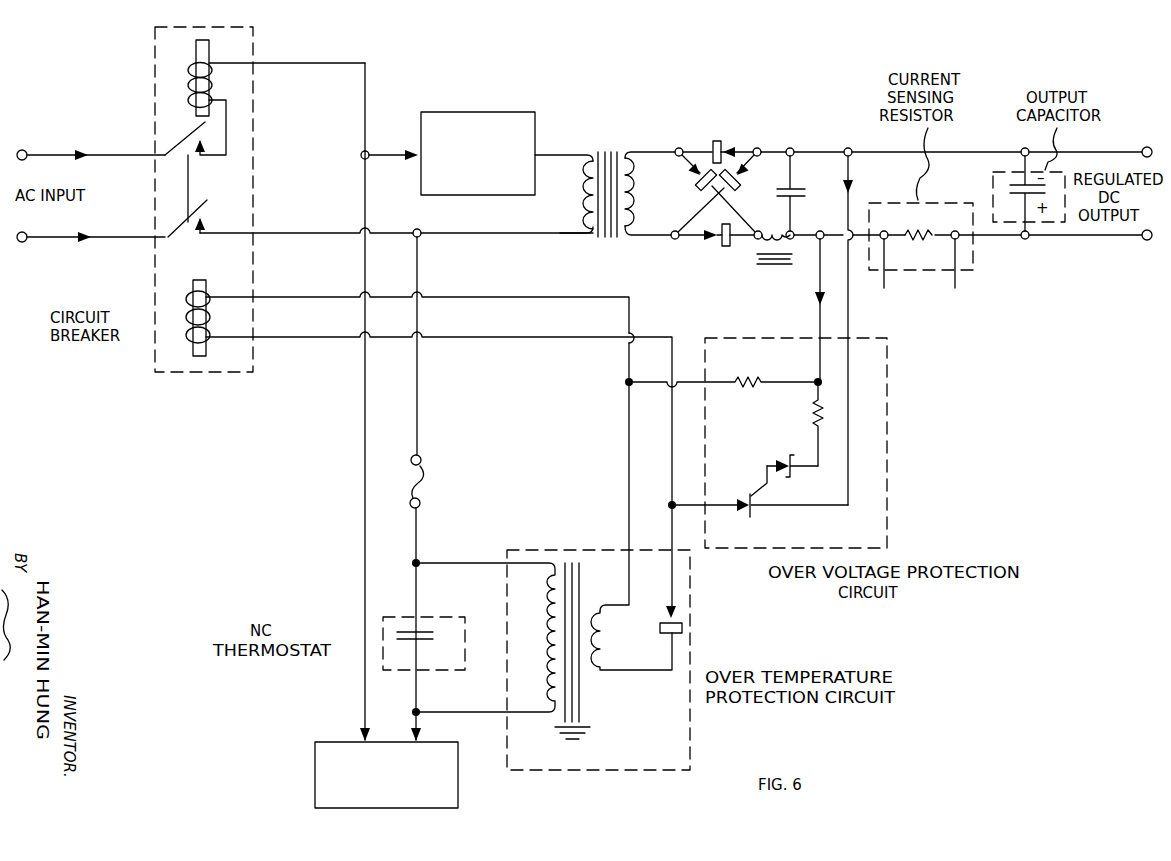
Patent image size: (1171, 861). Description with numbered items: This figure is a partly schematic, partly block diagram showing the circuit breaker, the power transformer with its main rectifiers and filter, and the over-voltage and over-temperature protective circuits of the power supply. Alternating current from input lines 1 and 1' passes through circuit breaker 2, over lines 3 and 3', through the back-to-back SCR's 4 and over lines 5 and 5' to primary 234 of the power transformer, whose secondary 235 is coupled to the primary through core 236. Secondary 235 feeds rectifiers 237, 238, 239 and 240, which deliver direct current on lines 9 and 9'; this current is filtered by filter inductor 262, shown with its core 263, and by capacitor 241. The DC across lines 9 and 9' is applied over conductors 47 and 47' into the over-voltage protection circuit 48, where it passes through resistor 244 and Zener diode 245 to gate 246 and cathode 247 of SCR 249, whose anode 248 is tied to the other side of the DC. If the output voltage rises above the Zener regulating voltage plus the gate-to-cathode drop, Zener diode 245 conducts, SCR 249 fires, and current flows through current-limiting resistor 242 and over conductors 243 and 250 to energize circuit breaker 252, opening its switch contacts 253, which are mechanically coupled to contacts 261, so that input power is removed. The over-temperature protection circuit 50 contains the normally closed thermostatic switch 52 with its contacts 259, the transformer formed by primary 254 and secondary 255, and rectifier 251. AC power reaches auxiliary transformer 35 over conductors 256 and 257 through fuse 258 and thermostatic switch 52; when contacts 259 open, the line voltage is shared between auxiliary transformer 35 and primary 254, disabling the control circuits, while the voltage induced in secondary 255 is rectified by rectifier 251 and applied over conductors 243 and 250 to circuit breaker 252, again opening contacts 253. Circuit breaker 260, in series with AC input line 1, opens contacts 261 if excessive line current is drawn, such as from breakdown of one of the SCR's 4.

The AC input line 1 is at (91, 141).
The AC input line 1' is at (91, 247).
The circuit breaker 2 is at (258, 49).
The line 3 is at (389, 139).
The line 3' is at (396, 220).
The SCR's 4 is at (491, 110).
The line 5 is at (564, 141).
The line 5' is at (564, 219).
The DC voltage line 9 is at (913, 138).
The DC voltage line 9' is at (911, 223).
The auxiliary transformer 35 is at (462, 762).
The conductor 47 is at (805, 310).
The conductor 47' is at (866, 330).
The over-voltage protection circuit 48 is at (888, 370).
The over-temperature protection circuit 50 is at (625, 770).
The normally closed thermostatic switch 52 is at (468, 672).
The primary 234 is at (590, 145).
The secondary 235 is at (637, 145).
The power transformer core 236 is at (608, 148).
The rectifier 237 is at (714, 146).
The rectifier 238 is at (697, 184).
The rectifier 239 is at (722, 242).
The rectifier 240 is at (735, 184).
The capacitor 241 is at (812, 192).
The resistor 242 is at (742, 378).
The conductor 243 is at (506, 296).
The resistor 244 is at (812, 412).
The Zener diode 245 is at (784, 460).
The gate 246 is at (756, 488).
The cathode 247 is at (752, 510).
The anode 248 is at (736, 508).
The SCR 249 is at (746, 500).
The conductor 250 is at (560, 340).
The rectifier 251 is at (668, 614).
The circuit breaker 252 is at (194, 306).
The switch contacts 253 is at (200, 205).
The primary 254 is at (550, 715).
The secondary 255 is at (590, 668).
The conductor 256 is at (365, 392).
The conductor 257 is at (417, 402).
The fuse 258 is at (426, 472).
The contacts 259 is at (424, 643).
The circuit breaker 260 is at (196, 45).
The contacts 261 is at (180, 142).
The filter inductor 262 is at (760, 250).
The inductor core 263 is at (774, 266).